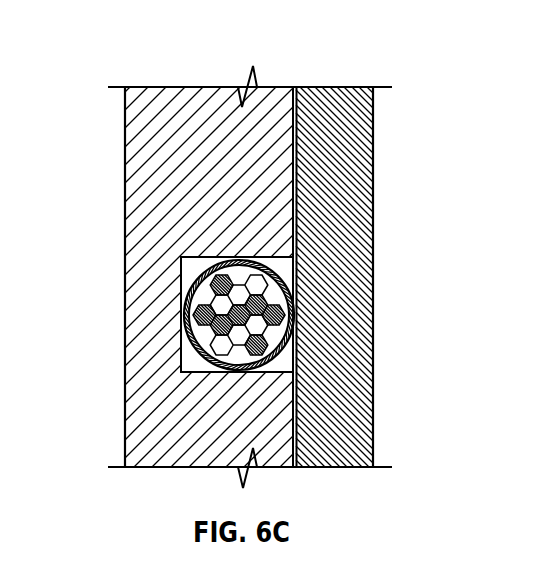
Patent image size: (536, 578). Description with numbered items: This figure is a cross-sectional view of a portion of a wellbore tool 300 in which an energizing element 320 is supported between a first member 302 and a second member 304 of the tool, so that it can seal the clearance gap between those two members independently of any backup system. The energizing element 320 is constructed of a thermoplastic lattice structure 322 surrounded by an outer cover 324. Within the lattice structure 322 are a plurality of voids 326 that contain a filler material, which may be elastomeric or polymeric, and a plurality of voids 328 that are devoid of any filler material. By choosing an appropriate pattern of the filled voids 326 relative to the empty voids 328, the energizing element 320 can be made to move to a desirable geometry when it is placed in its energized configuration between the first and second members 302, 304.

The wellbore tool 300 is at (355, 36).
The first member 302 is at (125, 158).
The second member 304 is at (373, 148).
The energizing element 320 is at (291, 266).
The thermoplastic lattice structure 322 is at (268, 328).
The outer cover 324 is at (302, 353).
The voids containing filler material 326 is at (184, 313).
The voids devoid of filler material 328 is at (222, 301).